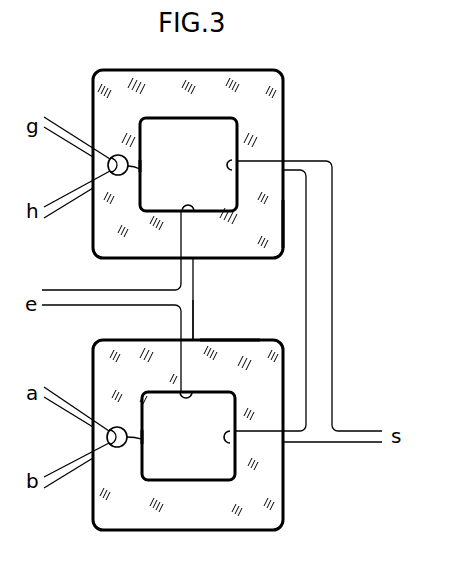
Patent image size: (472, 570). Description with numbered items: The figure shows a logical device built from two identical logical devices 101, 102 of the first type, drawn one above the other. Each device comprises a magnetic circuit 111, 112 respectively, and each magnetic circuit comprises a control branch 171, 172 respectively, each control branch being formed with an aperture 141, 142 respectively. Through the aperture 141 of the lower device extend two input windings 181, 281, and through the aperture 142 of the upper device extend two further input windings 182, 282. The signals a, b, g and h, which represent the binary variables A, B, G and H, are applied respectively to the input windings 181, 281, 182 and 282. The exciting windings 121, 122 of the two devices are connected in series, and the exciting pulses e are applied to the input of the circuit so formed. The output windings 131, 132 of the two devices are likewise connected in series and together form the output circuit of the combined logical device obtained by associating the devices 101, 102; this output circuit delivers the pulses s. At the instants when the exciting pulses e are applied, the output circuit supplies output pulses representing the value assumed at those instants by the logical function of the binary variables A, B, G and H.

The logical device 101 is at (232, 528).
The logical device 102 is at (260, 63).
The magnetic circuit 111 is at (246, 340).
The magnetic circuit 112 is at (274, 253).
The exciting winding 121 is at (193, 330).
The exciting winding 122 is at (193, 273).
The output winding 131 is at (310, 442).
The output winding 132 is at (308, 161).
The aperture 141 is at (142, 444).
The aperture 142 is at (140, 171).
The control branch 171 is at (142, 413).
The control branch 172 is at (140, 141).
The input winding 181 is at (57, 395).
The input winding 182 is at (57, 123).
The input winding 281 is at (60, 478).
The input winding 282 is at (60, 209).